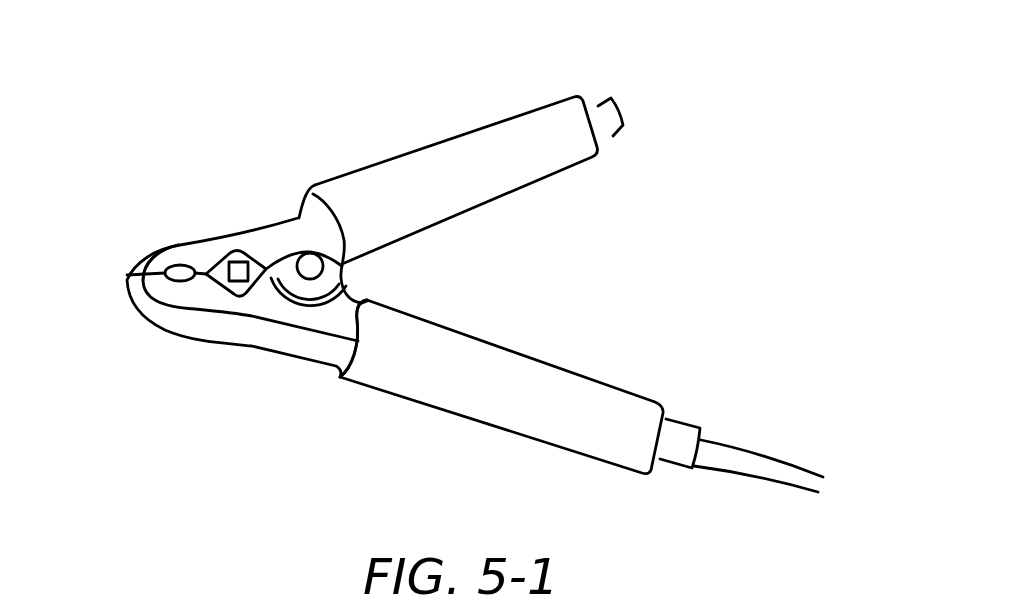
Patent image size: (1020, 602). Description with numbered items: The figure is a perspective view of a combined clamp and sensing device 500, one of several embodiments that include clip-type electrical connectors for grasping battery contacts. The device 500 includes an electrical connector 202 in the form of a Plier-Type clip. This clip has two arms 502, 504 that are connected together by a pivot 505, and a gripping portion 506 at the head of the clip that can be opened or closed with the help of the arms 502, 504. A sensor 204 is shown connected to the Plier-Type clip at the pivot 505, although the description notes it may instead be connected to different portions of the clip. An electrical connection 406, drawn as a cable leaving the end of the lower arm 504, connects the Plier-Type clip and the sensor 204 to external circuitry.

The combined clamp and sensing device 500 is at (446, 274).
The arm 502 is at (572, 167).
The arm 504 is at (623, 388).
The gripping portion 506 is at (155, 285).
The sensor 204 is at (230, 280).
The pivot 505 is at (305, 292).
The electrical connector 202 is at (322, 381).
The electrical connection 406 is at (762, 478).